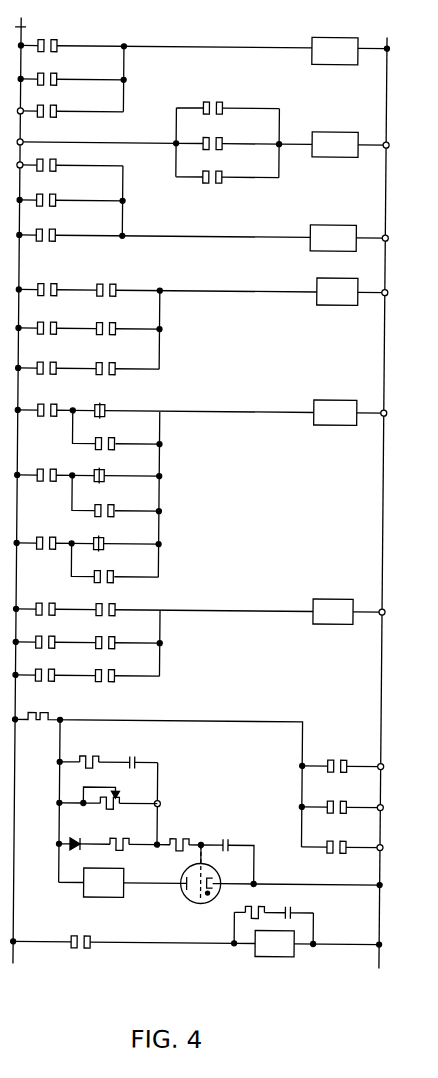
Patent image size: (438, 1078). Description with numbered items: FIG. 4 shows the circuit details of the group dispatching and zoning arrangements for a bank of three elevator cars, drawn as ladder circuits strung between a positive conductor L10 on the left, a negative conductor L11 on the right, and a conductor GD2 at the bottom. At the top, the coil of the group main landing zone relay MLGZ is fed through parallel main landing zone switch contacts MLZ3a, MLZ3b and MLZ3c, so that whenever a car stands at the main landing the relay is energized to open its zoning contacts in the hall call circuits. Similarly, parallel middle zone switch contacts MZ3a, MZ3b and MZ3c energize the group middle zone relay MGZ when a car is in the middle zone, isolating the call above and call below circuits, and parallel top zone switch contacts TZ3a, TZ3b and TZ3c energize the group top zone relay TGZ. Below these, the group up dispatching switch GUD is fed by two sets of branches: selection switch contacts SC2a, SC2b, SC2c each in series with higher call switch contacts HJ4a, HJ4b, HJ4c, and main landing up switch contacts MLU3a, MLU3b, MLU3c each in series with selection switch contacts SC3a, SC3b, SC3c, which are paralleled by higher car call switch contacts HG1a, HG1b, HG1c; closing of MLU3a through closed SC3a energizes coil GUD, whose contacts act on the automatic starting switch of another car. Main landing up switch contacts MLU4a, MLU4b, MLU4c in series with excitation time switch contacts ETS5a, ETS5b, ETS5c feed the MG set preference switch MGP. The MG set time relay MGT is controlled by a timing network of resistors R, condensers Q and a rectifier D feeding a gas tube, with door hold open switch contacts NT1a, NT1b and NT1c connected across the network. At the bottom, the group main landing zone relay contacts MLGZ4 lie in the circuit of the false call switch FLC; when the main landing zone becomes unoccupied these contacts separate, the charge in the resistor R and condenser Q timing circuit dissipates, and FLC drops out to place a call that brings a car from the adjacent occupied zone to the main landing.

The positive supply line L10 is at (14, 481).
The negative supply line L11 is at (389, 30).
The ground line GD2 is at (16, 980).
The main landing zone switch contacts MLZ3a is at (38, 23).
The main landing zone switch contacts MLZ3b is at (46, 77).
The main landing zone switch contacts MLZ3c is at (46, 112).
The group main landing zone relay MLGZ is at (342, 37).
The middle zone switch contacts MZ3a is at (208, 85).
The middle zone switch contacts MZ3b is at (208, 120).
The middle zone switch contacts MZ3c is at (208, 155).
The group middle zone relay MGZ is at (334, 145).
The top zone switch contacts TZ3a is at (41, 165).
The top zone switch contacts TZ3b is at (46, 200).
The top zone switch contacts TZ3c is at (46, 235).
The group top zone relay TGZ is at (349, 238).
The selection switch contacts SC2a is at (75, 280).
The selection switch contacts SC2b is at (75, 320).
The selection switch contacts SC2c is at (75, 362).
The higher call switch contacts HJ4a is at (137, 280).
The higher call switch contacts HJ4b is at (137, 320).
The higher call switch contacts HJ4c is at (137, 362).
The group up dispatching switch GUD is at (351, 352).
The main landing up switch contacts MLU3a is at (87, 403).
The main landing up switch contacts MLU3b is at (87, 471).
The main landing up switch contacts MLU3c is at (88, 538).
The selection switch contacts SC3a is at (102, 406).
The selection switch contacts SC3b is at (98, 472).
The selection switch contacts SC3c is at (100, 539).
The higher car call switch contacts HG1a is at (128, 437).
The higher car call switch contacts HG1b is at (129, 505).
The higher car call switch contacts HG1c is at (129, 572).
The main landing up switch contacts MLU4a is at (89, 605).
The main landing up switch contacts MLU4b is at (89, 638).
The main landing up switch contacts MLU4c is at (89, 671).
The excitation time switch contacts ETS5a is at (107, 606).
The excitation time switch contacts ETS5b is at (95, 639).
The excitation time switch contacts ETS5c is at (91, 672).
The MG set preference switch MGP is at (349, 612).
The resistor R is at (92, 758).
The condenser Q is at (134, 758).
The rectifier D is at (81, 840).
The MG set time relay MGT is at (120, 883).
The door hold open switch contacts NT1a is at (363, 756).
The door hold open switch contacts NT1b is at (363, 798).
The door hold open switch contacts NT1c is at (363, 837).
The group main landing zone relay contacts MLGZ4 is at (56, 923).
The false call switch FLC is at (307, 934).